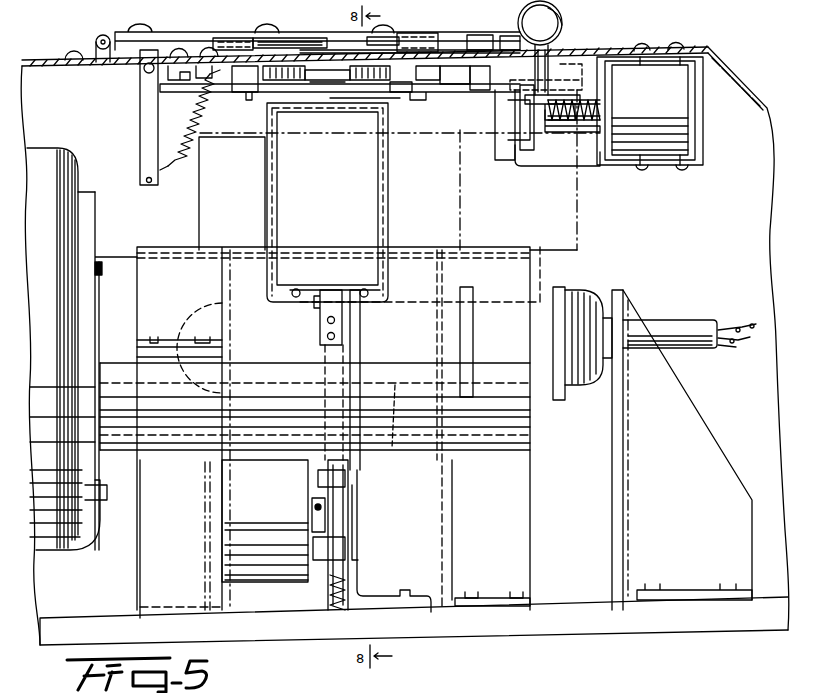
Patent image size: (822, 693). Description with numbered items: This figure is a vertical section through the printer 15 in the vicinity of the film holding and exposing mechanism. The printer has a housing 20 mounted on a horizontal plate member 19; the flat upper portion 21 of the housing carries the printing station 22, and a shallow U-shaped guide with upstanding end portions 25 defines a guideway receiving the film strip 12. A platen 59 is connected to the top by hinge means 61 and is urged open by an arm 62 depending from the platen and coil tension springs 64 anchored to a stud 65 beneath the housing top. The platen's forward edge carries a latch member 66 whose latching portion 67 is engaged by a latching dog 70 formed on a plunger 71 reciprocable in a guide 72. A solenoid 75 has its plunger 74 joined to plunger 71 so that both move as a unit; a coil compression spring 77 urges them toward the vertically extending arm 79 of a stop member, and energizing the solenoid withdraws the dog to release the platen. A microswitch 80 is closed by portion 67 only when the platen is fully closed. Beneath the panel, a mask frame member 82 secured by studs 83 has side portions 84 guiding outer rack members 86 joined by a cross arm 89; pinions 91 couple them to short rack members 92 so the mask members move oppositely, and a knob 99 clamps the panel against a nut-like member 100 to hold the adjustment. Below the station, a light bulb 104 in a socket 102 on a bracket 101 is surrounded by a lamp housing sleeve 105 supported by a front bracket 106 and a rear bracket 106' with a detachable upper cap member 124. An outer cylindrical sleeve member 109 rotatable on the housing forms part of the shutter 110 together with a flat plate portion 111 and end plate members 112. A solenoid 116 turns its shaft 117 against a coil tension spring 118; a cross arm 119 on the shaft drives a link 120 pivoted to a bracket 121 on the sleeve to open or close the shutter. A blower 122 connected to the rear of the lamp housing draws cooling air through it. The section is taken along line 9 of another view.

The section line 9 is at (366, 84).
The film strip 12 is at (326, 34).
The printer 15 is at (638, 35).
The horizontal plate member 19 is at (540, 634).
The housing 20 is at (732, 78).
The upper portion of housing 21 is at (40, 62).
The printing station 22 is at (248, 25).
The upstanding end portions 25 is at (272, 30).
The platen 59 is at (440, 34).
The hinge means 61 is at (93, 39).
The arm 62 is at (141, 100).
The coil tension springs 64 is at (186, 156).
The stud 65 is at (214, 80).
The latch member 66 is at (478, 62).
The latching portion 67 is at (489, 22).
The latching dog 70 is at (540, 48).
The plunger 71 is at (576, 50).
The guide 72 is at (578, 82).
The solenoid plunger 74 is at (585, 107).
The solenoid 75 is at (690, 100).
The coil compression spring 77 is at (560, 134).
The vertically extending arm 79 is at (520, 162).
The microswitch 80 is at (476, 174).
The mask frame member 82 is at (254, 118).
The studs 83 is at (244, 112).
The side portions 84 is at (234, 96).
The outer rack members 86 is at (286, 80).
The cross arm 89 is at (386, 84).
The pinion 91 is at (312, 80).
The short rack members 92 is at (336, 80).
The knob 99 is at (566, 20).
The nut-like member 100 is at (526, 92).
The bracket 101 is at (700, 420).
The socket 102 is at (548, 398).
The light bulb 104 is at (392, 448).
The lamp housing sleeve 105 is at (100, 262).
The front bracket 106 is at (602, 453).
The rear bracket 106' is at (125, 539).
The outer cylindrical sleeve member 109 is at (416, 244).
The shutter 110 is at (406, 202).
The flat plate portion 111 is at (272, 206).
The end plate members 112 is at (268, 176).
The solenoid 116 is at (262, 580).
The shaft 117 is at (310, 514).
The coil tension spring 118 is at (330, 600).
The cross arm 119 is at (350, 512).
The link 120 is at (362, 342).
The bracket 121 is at (318, 322).
The blower 122 is at (46, 550).
The upper cap member 124 is at (156, 260).